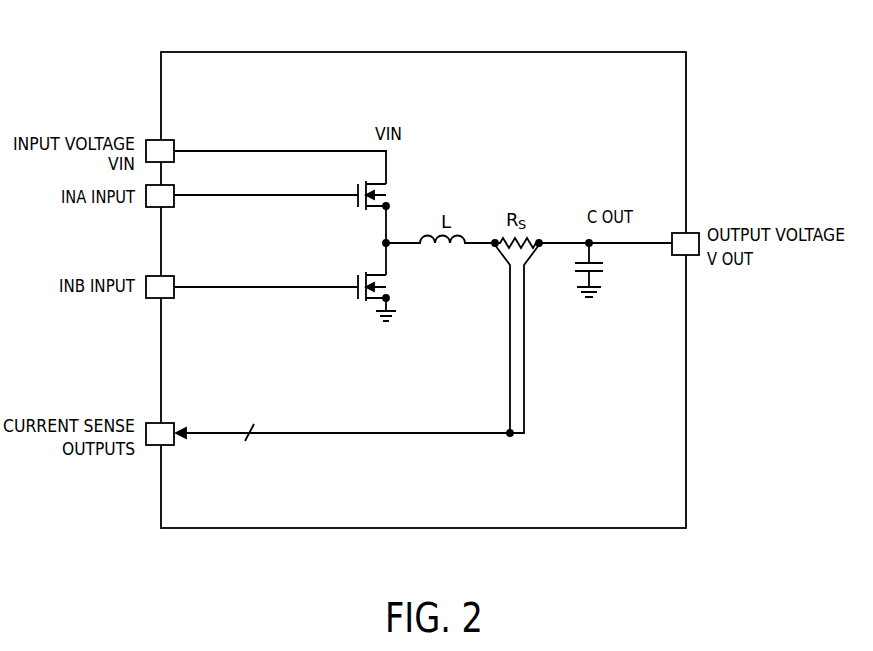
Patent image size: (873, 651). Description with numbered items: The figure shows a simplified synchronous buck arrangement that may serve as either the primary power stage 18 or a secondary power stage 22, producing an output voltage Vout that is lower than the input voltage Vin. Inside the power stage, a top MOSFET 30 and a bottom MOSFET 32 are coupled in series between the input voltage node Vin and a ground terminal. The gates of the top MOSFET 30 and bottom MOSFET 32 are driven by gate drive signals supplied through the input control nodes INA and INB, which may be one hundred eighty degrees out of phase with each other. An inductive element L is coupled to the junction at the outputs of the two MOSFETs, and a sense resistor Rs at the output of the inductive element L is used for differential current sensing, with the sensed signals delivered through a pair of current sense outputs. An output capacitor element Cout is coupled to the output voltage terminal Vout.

The primary power stage 18 is at (423, 271).
The secondary power stage 22 is at (641, 37).
The top MOSFET 30 is at (396, 192).
The bottom MOSFET 32 is at (396, 294).